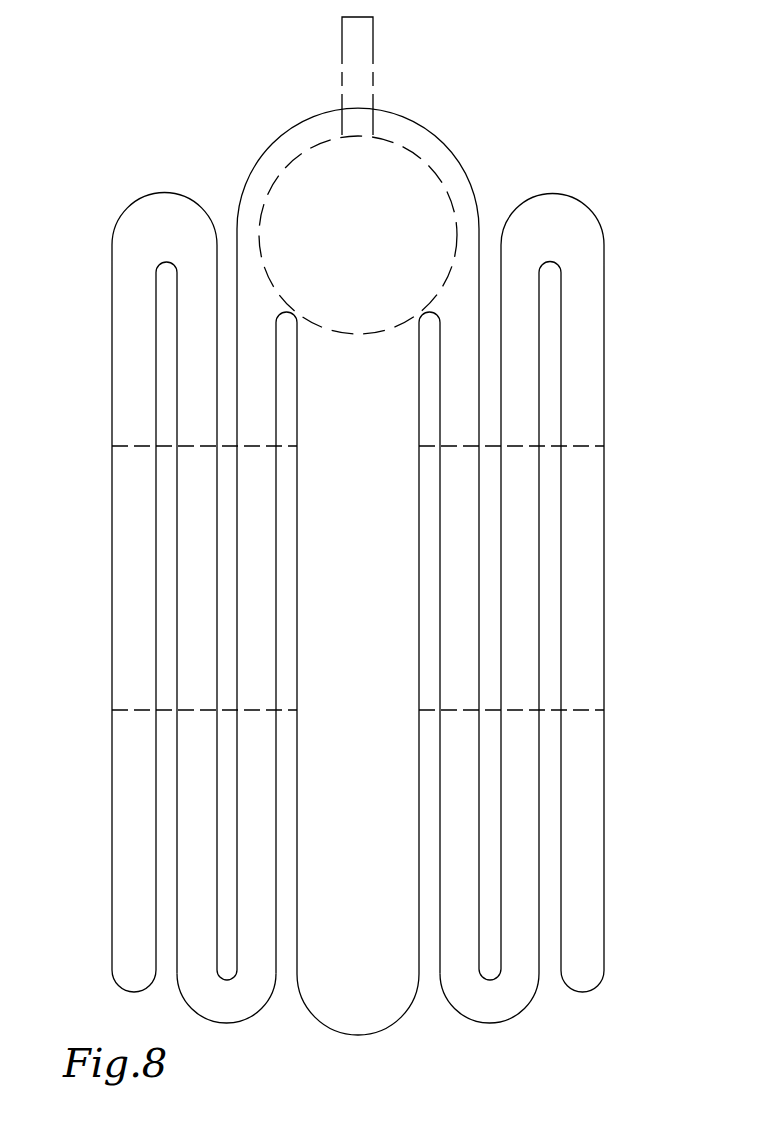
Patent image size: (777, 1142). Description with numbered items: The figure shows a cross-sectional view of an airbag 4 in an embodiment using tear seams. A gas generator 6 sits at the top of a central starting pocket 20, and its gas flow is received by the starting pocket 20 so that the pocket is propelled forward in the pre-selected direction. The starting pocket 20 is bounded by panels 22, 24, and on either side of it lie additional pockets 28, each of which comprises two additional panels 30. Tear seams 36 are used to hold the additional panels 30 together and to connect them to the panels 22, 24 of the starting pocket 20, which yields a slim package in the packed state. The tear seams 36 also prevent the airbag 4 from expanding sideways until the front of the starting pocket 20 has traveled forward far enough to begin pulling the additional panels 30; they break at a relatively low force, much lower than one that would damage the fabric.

The airbag 4 is at (517, 145).
The gas generator 6 is at (378, 243).
The starting pocket 20 is at (371, 696).
The panel of the starting pocket 22 is at (297, 757).
The panel of the starting pocket 24 is at (419, 849).
The additional pocket 28 is at (209, 656).
The additional panel 30 is at (276, 495).
The tear seam 36 is at (113, 447).